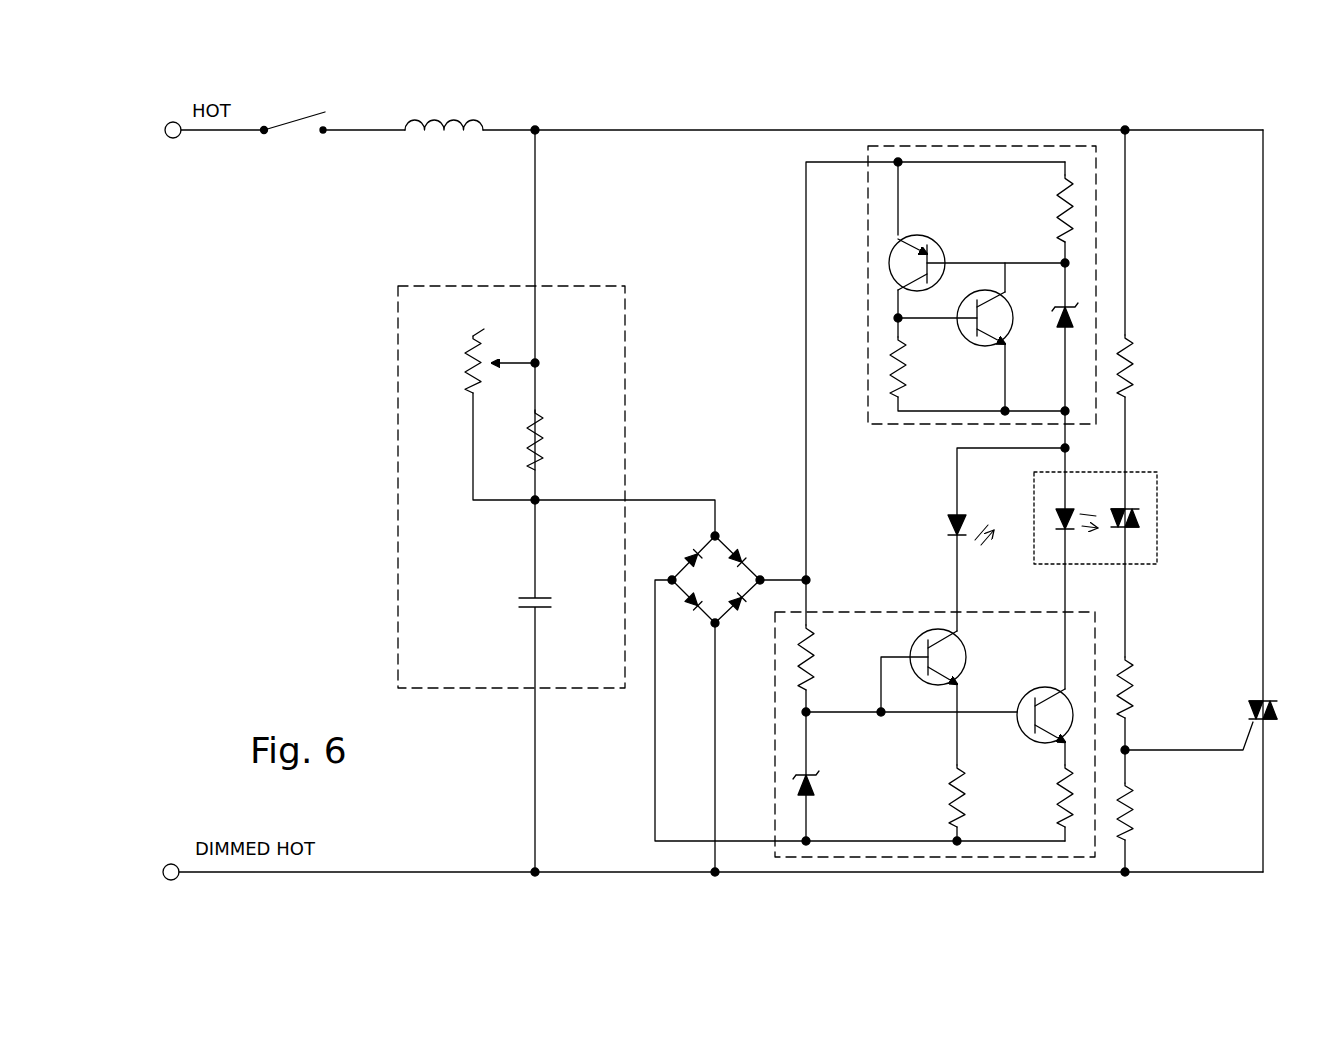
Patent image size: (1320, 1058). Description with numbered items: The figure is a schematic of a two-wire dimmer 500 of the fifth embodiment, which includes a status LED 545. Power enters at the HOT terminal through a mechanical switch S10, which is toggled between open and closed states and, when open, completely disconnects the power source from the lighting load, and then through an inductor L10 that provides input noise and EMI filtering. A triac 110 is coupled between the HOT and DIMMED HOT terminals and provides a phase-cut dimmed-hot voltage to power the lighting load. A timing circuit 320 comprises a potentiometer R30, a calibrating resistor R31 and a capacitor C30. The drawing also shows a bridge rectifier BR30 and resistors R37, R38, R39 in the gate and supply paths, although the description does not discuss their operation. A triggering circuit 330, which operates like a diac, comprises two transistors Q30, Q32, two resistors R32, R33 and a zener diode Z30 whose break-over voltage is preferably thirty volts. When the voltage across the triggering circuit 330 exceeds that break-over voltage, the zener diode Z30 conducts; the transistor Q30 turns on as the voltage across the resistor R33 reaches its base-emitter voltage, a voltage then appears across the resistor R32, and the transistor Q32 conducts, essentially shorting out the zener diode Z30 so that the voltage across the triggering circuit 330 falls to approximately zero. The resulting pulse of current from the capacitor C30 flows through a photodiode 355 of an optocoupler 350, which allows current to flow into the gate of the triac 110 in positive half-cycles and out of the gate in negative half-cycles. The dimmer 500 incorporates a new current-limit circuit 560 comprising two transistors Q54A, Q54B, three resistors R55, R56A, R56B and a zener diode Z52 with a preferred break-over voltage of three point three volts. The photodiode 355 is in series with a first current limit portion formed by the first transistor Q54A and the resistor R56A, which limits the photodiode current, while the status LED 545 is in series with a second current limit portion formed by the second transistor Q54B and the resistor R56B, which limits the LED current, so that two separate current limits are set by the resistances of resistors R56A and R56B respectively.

The two-wire dimmer 500 is at (834, 94).
The mechanical switch S10 is at (294, 107).
The inductor L10 is at (444, 102).
The timing circuit 320 is at (398, 383).
The potentiometer R30 is at (479, 414).
The calibrating resistor R31 is at (559, 457).
The capacitor C30 is at (503, 607).
The bridge rectifier BR30 is at (800, 686).
The current-limit circuit 560 is at (925, 612).
The resistor R55 is at (829, 648).
The zener diode Z52 is at (827, 778).
The second transistor Q54B is at (913, 650).
The first transistor Q54A is at (1034, 646).
The resistor R56B is at (930, 805).
The resistor R56A is at (1038, 803).
The triggering circuit 330 is at (888, 424).
The transistor Q30 is at (935, 369).
The transistor Q32 is at (955, 339).
The resistor R32 is at (977, 364).
The resistor R33 is at (1042, 214).
The zener diode Z30 is at (1017, 389).
The status LED 545 is at (948, 522).
The optocoupler 350 is at (1157, 535).
The photodiode 355 is at (1056, 518).
The resistor R37 is at (1151, 393).
The resistor R38 is at (1150, 720).
The resistor R39 is at (1150, 827).
The triac 110 is at (1257, 701).